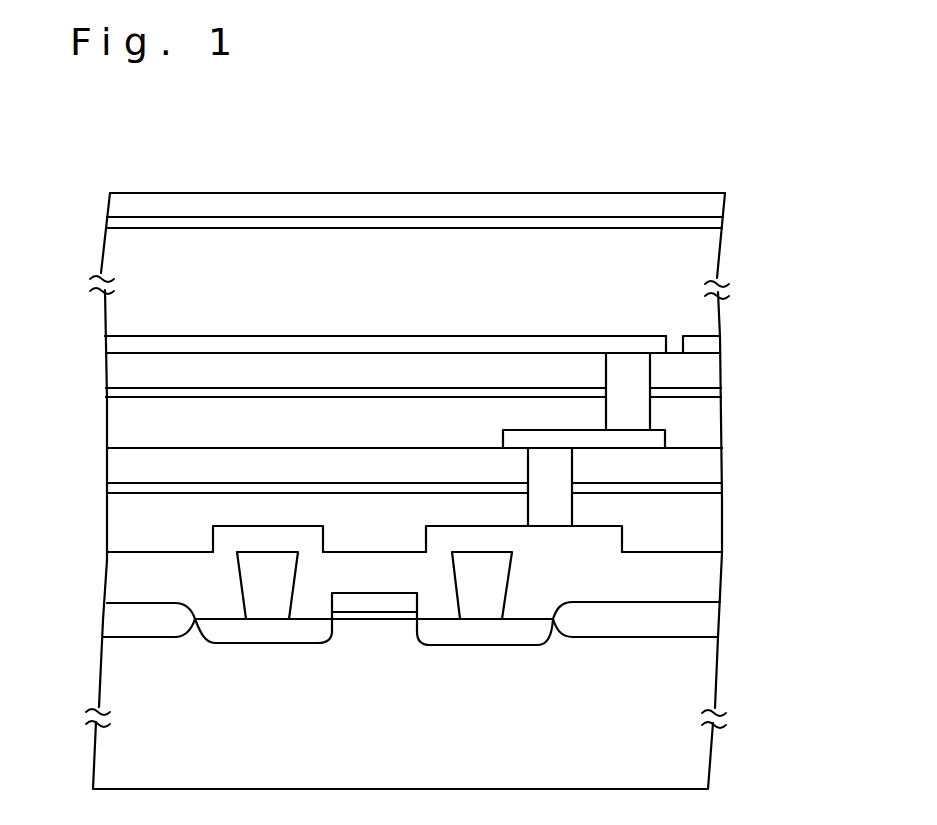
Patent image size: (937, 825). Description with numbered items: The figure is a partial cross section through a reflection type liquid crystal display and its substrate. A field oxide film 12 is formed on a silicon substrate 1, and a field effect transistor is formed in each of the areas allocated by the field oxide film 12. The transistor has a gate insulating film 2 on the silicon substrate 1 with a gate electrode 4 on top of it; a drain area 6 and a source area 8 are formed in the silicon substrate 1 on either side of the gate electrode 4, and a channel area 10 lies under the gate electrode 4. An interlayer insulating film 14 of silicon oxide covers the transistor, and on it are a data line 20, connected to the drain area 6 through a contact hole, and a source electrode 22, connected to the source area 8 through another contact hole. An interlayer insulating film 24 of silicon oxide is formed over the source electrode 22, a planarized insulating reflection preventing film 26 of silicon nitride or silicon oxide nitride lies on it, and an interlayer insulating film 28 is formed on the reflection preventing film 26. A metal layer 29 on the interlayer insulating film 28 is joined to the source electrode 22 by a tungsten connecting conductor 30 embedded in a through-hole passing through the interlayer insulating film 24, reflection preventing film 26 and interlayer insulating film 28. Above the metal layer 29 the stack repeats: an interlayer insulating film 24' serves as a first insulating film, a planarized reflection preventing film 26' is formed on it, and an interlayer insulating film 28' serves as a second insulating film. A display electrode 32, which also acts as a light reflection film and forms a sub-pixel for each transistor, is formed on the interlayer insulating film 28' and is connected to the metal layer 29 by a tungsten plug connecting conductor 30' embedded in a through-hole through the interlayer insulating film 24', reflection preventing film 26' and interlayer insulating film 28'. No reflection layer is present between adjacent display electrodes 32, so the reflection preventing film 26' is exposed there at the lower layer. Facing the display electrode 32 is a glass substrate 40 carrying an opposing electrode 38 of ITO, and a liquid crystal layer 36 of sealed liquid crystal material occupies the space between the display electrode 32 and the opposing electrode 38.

The silicon substrate 1 is at (700, 753).
The gate insulating film 2 is at (347, 613).
The gate electrode 4 is at (395, 603).
The drain area 6 is at (260, 640).
The source area 8 is at (488, 640).
The channel area 10 is at (372, 623).
The field oxide film 12 is at (718, 622).
The interlayer insulating film 14 is at (715, 585).
The data line 20 is at (213, 533).
The source electrode 22 is at (620, 538).
The interlayer insulating film 24 is at (474, 542).
The interlayer insulating film 24' is at (483, 406).
The reflection preventing film 26 is at (432, 493).
The reflection preventing film 26' is at (436, 358).
The interlayer insulating film 28 is at (477, 461).
The interlayer insulating film 28' is at (483, 329).
The metal layer 29 is at (667, 437).
The connecting conductor 30 is at (484, 487).
The connecting conductor 30' is at (561, 391).
The display electrode 32 is at (712, 344).
The liquid crystal layer 36 is at (715, 245).
The opposing electrode 38 is at (718, 221).
The glass substrate 40 is at (720, 200).